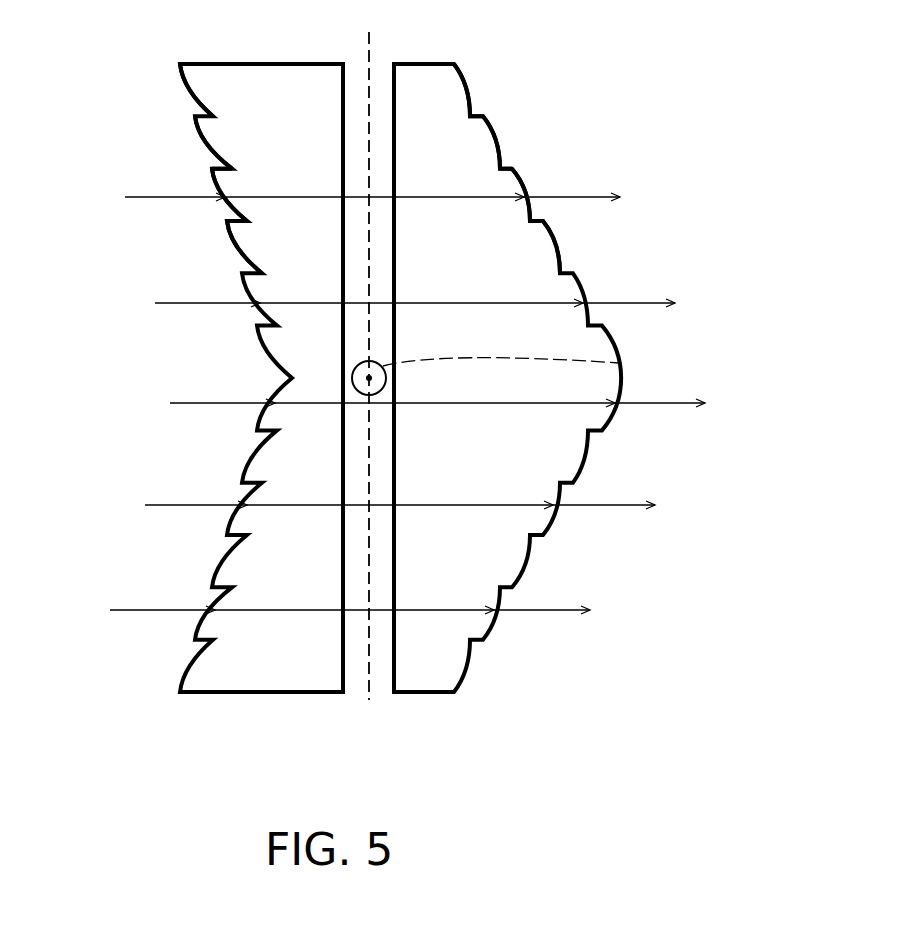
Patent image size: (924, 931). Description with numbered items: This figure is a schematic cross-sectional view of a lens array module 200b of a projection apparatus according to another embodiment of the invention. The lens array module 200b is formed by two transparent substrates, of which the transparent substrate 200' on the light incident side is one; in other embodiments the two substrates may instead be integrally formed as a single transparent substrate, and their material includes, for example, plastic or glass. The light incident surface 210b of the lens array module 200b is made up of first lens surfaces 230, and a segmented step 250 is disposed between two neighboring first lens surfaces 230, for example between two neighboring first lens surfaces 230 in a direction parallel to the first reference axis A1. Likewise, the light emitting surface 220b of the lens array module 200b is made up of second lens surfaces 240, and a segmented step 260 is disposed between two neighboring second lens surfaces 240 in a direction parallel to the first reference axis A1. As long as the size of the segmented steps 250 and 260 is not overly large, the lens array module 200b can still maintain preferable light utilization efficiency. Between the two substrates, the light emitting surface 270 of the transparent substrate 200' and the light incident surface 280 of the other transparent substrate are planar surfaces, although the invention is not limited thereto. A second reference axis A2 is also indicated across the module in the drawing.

The lens array module 200b is at (860, 795).
The transparent substrate 200' is at (261, 419).
The first lens surface 230 is at (187, 90).
The segmented step 250 is at (225, 166).
The light incident surface 210b is at (227, 250).
The light emitting surface 220b is at (468, 90).
The segmented step 260 is at (508, 165).
The second lens surface 240 is at (523, 178).
The second reference axis A2 is at (620, 363).
The light emitting surface 270 is at (346, 632).
The light incident surface 280 is at (396, 652).
The first reference axis A1 is at (369, 700).